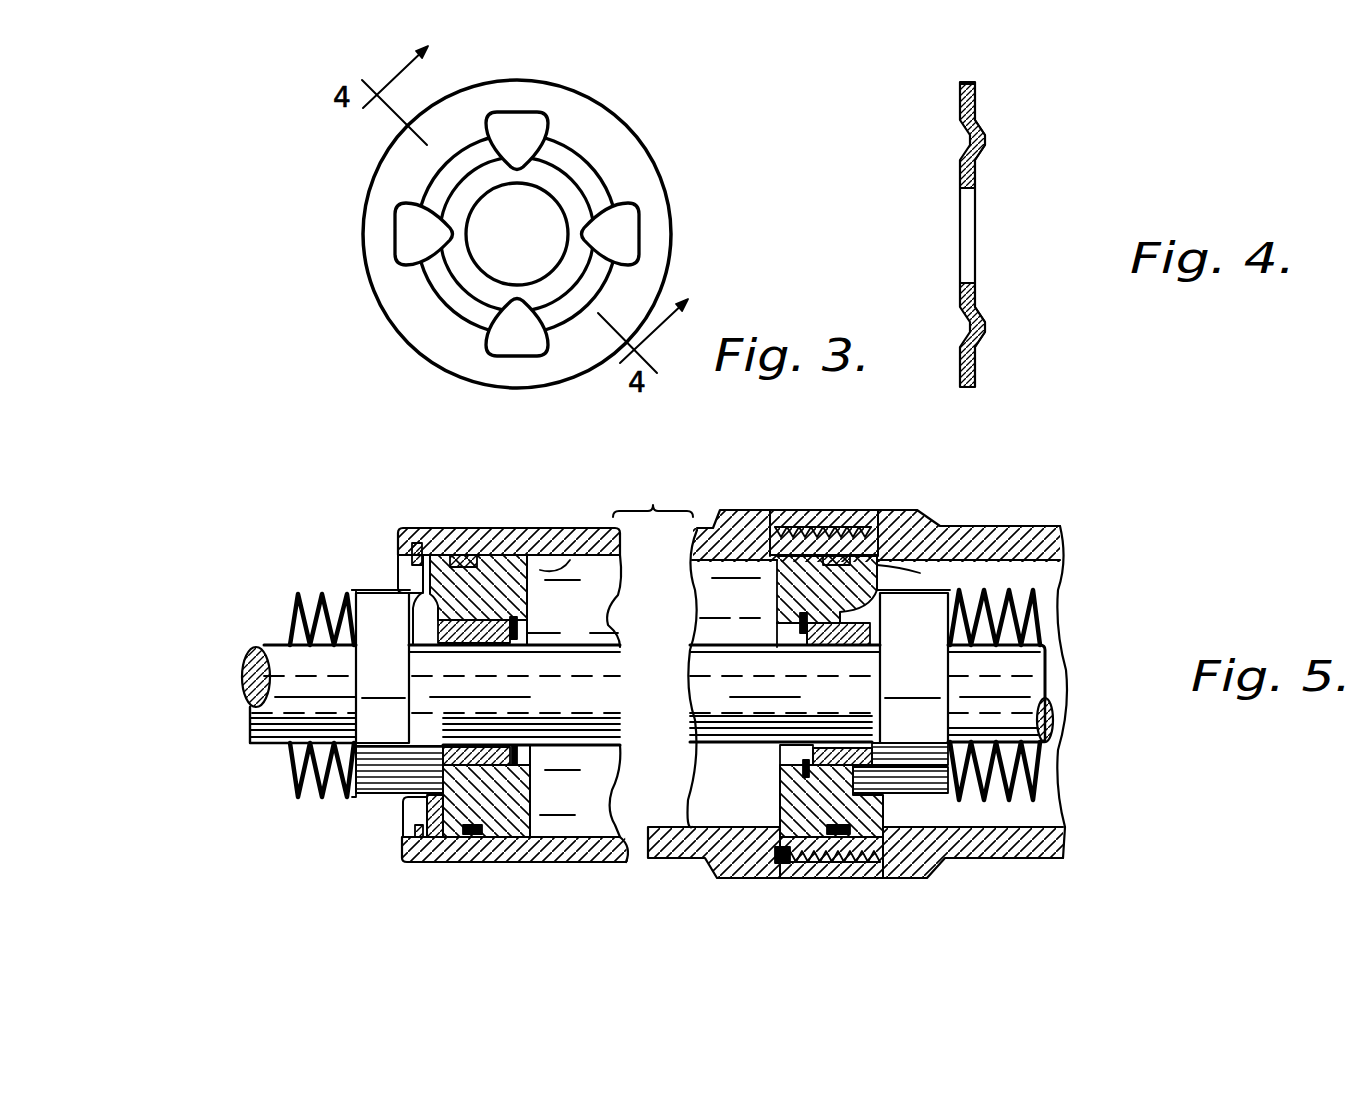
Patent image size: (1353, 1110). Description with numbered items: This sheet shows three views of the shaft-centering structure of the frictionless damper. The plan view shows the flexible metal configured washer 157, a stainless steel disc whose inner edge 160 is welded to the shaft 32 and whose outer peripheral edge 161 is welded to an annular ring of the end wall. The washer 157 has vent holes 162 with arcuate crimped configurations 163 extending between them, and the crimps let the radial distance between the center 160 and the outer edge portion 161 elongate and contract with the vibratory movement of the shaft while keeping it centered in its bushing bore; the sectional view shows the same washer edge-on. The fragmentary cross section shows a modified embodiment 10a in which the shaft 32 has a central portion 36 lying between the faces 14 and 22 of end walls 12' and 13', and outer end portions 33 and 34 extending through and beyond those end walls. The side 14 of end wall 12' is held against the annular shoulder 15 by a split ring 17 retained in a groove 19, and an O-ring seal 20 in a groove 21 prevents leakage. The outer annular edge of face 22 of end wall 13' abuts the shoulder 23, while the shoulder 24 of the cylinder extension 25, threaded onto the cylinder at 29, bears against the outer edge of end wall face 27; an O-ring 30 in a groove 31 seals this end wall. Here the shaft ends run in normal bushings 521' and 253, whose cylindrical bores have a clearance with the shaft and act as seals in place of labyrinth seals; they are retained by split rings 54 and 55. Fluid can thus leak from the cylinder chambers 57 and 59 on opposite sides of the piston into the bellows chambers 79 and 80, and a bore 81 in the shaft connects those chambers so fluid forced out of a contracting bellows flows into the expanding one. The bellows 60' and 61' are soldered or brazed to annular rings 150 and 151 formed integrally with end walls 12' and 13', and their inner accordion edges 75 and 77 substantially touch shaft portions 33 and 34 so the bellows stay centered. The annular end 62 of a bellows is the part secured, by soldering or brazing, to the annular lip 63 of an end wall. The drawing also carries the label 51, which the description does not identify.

In FIG. 5, the modified embodiment 10a is at (924, 471).
In FIG. 5, the split ring 17 is at (419, 543).
In FIG. 5, the end wall 12' is at (470, 560).
In FIG. 5, the annular shoulder 15 is at (480, 561).
In FIG. 5, the side of end wall 14 is at (533, 590).
In FIG. 5, the annular ring 150 is at (400, 593).
In FIG. 5, the outer end portion of shaft 33 is at (243, 662).
In FIG. 5, the bore 81 is at (242, 688).
In FIG. 5, the inner accordion edge of bellows 75 is at (303, 691).
In FIG. 5, the bellows chamber 79 is at (290, 772).
In FIG. 5, the bellows 60' is at (300, 787).
In FIG. 5, the annular end of bellows seal 62 is at (397, 802).
In FIG. 5, the annular lip of end wall 63 is at (403, 817).
In FIG. 5, the groove 19 is at (403, 842).
In FIG. 5, the O-ring seal 20 is at (455, 837).
In FIG. 5, the groove 21 is at (470, 835).
In FIG. 5, the chamber 51 is at (583, 820).
In FIG. 5, the cylinder chamber 57 is at (602, 837).
In FIG. 5, the bushing 521' is at (515, 791).
In FIG. 5, the shaft 32 is at (582, 722).
In FIG. 5, the split ring 54 is at (523, 632).
In FIG. 5, the end wall 13' is at (827, 545).
In FIG. 5, the threaded connection 29 is at (848, 510).
In FIG. 5, the shoulder of cylinder extension 24 is at (875, 550).
In FIG. 5, the end wall face 27 is at (940, 568).
In FIG. 5, the cylinder extension 25 is at (1062, 538).
In FIG. 5, the face of end wall 22 is at (777, 595).
In FIG. 5, the central portion of shaft 36 is at (748, 641).
In FIG. 5, the annular ring 151 is at (930, 592).
In FIG. 5, the inner accordion edge of bellows 77 is at (962, 645).
In FIG. 5, the split ring 55 is at (780, 757).
In FIG. 5, the bushing 253 is at (790, 818).
In FIG. 5, the cylinder chamber 59 is at (680, 820).
In FIG. 5, the shoulder of cylinder 23 is at (781, 865).
In FIG. 5, the O-ring 30 is at (800, 770).
In FIG. 5, the groove 31 is at (847, 860).
In FIG. 5, the outer end portion of shaft 34 is at (1053, 732).
In FIG. 5, the bellows chamber 80 is at (1028, 763).
In FIG. 5, the bellows 61' is at (1039, 787).
In FIG. 3, the flexible metal configured washer 157 is at (528, 81).
In FIG. 4, the flexible metal configured washer 157 is at (978, 112).
In FIG. 3, the inner edge of washer 160 is at (493, 200).
In FIG. 4, the inner edge of washer 160 is at (976, 198).
In FIG. 3, the outer peripheral edge of washer 161 is at (640, 163).
In FIG. 4, the outer peripheral edge of washer 161 is at (958, 92).
In FIG. 3, the vent holes 162 is at (547, 120).
In FIG. 3, the arcuate crimped configurations 163 is at (590, 158).
In FIG. 4, the arcuate crimped configurations 163 is at (988, 140).